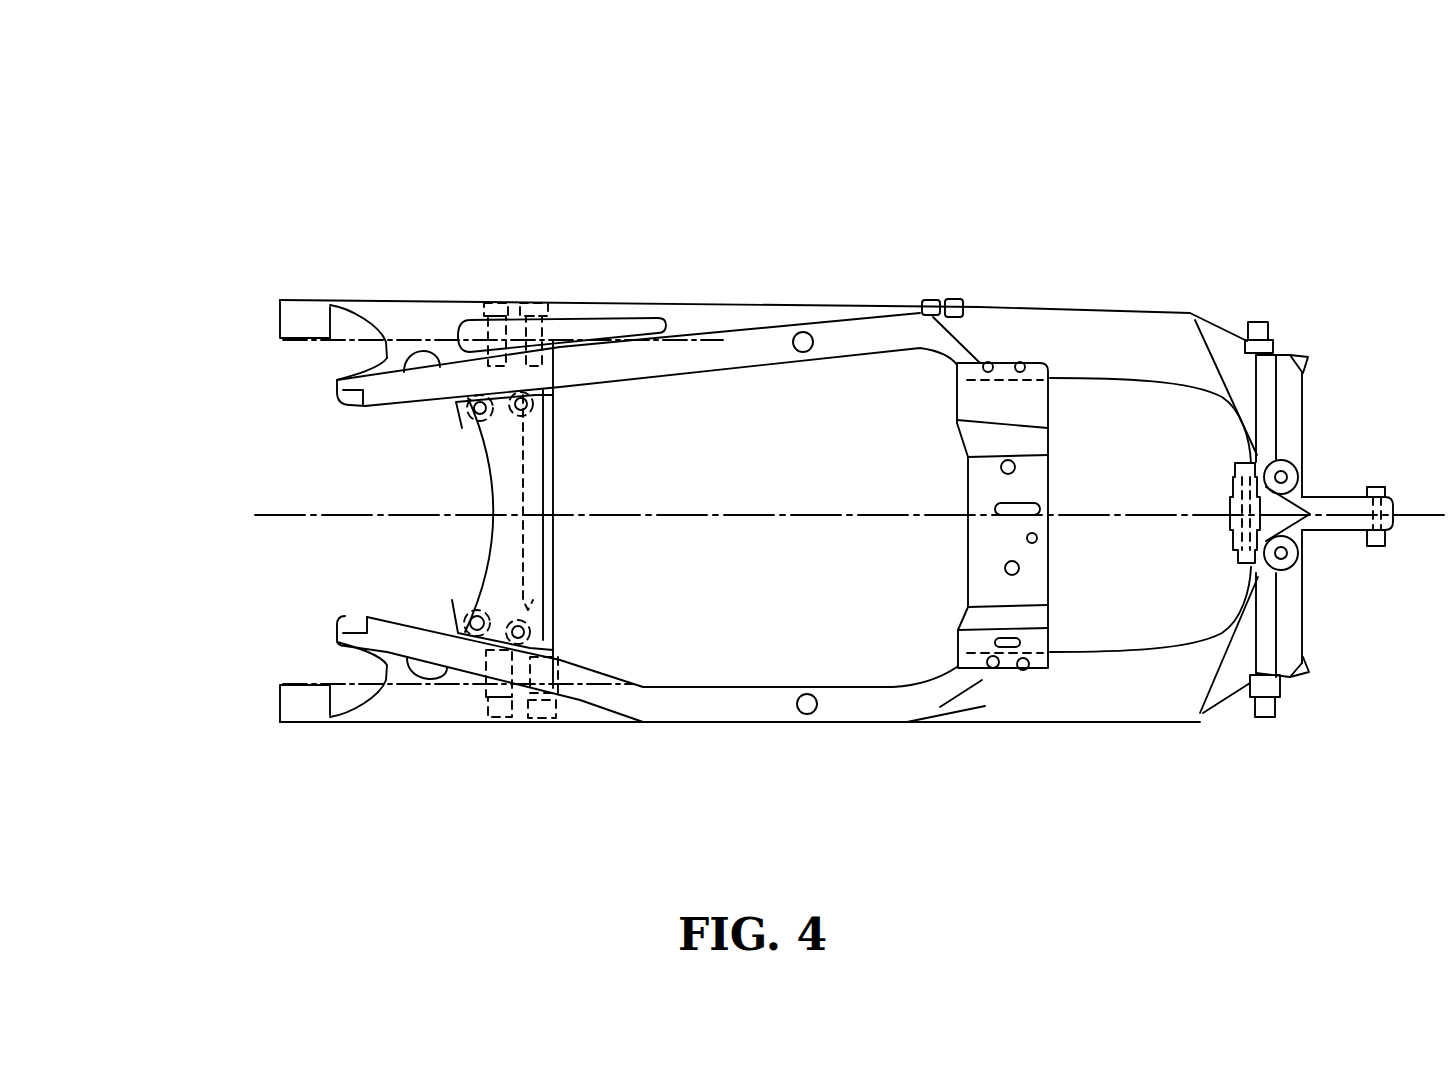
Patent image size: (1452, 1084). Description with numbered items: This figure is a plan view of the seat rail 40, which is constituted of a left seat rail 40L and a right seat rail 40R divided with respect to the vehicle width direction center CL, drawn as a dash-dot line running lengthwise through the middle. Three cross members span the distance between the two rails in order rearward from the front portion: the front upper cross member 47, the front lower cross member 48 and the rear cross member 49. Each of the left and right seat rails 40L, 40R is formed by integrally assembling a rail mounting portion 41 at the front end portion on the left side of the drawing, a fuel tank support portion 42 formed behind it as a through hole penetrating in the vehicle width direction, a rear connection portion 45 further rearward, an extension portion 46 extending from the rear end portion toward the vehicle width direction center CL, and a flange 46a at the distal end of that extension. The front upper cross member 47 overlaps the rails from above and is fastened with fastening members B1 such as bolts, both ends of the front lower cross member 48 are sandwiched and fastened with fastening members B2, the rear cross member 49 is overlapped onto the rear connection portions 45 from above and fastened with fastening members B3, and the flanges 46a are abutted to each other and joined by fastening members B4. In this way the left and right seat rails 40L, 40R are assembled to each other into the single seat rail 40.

The seat rail 40 is at (253, 186).
The right seat rail 40R is at (696, 303).
The left seat rail 40L is at (689, 724).
The rail mounting portion 41 is at (340, 397).
The fuel tank support portion 42 is at (412, 345).
The rear connection portion 45 is at (987, 352).
The extension portion 46 is at (1292, 403).
The flange 46a is at (1347, 522).
The front upper cross member 47 is at (537, 480).
The front lower cross member 48 is at (557, 562).
The rear cross member 49 is at (1040, 483).
The fastening member B1 is at (515, 418).
The fastening member B2 is at (536, 302).
The fastening member B3 is at (990, 362).
The fastening member B4 is at (1243, 470).
The vehicle width direction center CL is at (268, 513).